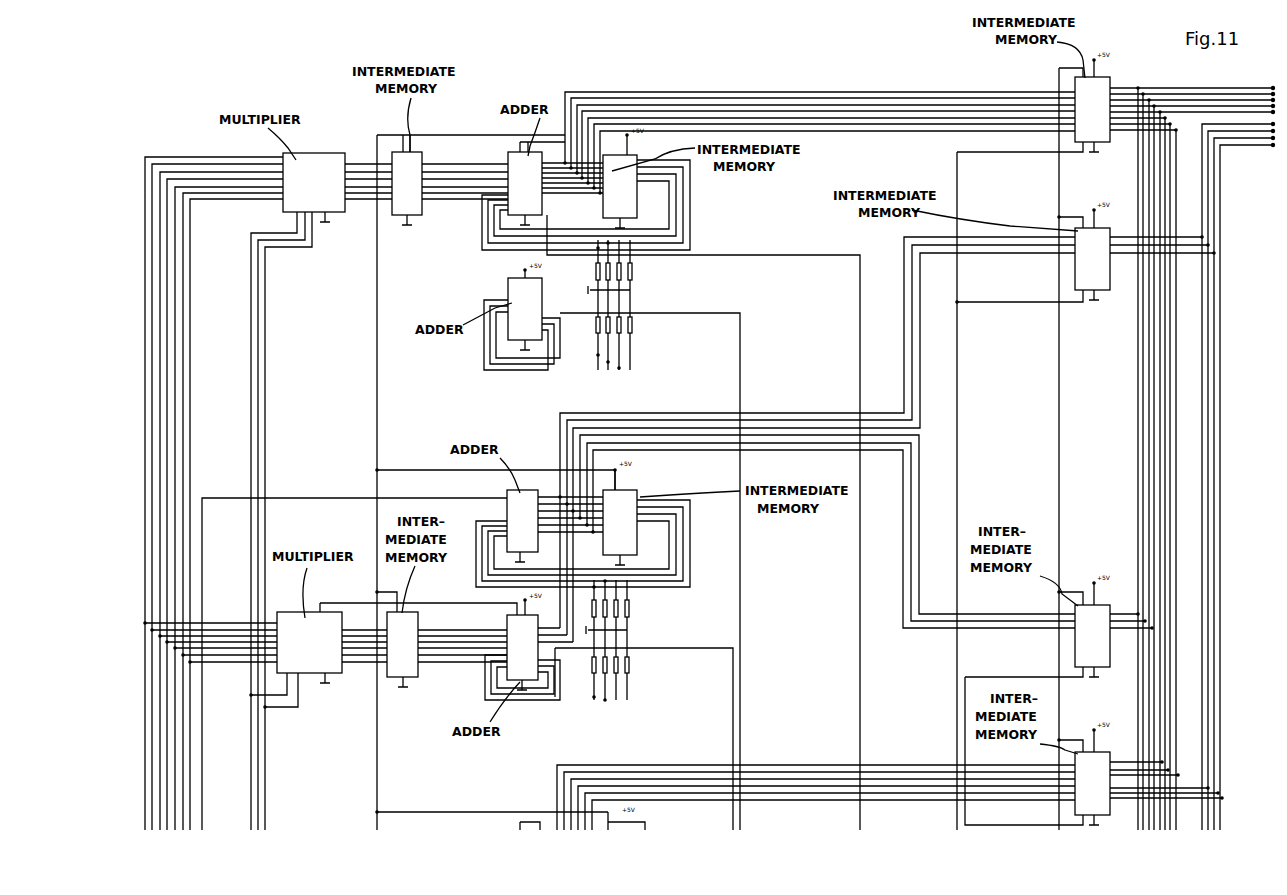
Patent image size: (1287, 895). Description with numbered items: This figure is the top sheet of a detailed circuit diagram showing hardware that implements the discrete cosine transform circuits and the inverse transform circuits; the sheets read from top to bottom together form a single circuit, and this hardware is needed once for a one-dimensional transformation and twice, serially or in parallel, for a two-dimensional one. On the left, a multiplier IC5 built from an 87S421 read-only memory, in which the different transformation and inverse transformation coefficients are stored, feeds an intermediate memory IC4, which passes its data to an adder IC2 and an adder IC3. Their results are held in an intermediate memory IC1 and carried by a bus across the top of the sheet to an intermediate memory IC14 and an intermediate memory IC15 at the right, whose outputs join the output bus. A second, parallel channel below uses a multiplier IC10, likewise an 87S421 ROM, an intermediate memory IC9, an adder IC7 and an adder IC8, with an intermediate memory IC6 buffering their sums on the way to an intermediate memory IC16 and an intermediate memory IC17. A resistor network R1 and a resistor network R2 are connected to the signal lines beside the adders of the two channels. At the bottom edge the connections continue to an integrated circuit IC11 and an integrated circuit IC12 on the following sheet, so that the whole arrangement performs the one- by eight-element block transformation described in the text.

The intermediate memory IC1 is at (631, 179).
The adder IC2 is at (512, 181).
The adder IC3 is at (512, 300).
The intermediate memory IC4 is at (419, 181).
The multiplier IC5 is at (314, 173).
The intermediate memory IC6 is at (635, 515).
The adder IC7 is at (508, 513).
The adder IC8 is at (508, 640).
The intermediate memory IC9 is at (415, 639).
The multiplier IC10 is at (309, 632).
The integrated circuit IC11 is at (641, 823).
The integrated circuit IC12 is at (505, 828).
The intermediate memory IC14 is at (1108, 104).
The intermediate memory IC15 is at (1107, 253).
The intermediate memory IC16 is at (1107, 630).
The intermediate memory IC17 is at (1107, 777).
The resistor network R1 is at (610, 305).
The resistor network R2 is at (607, 640).